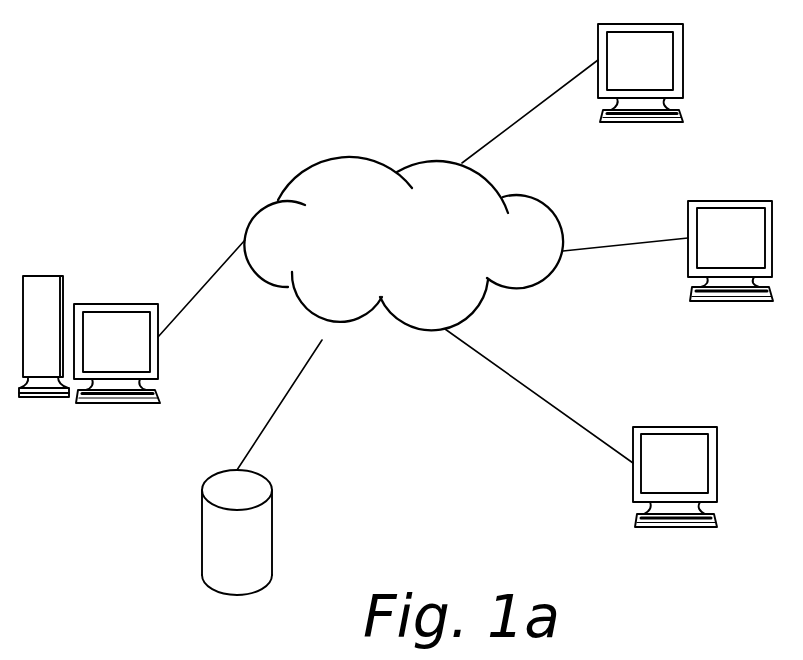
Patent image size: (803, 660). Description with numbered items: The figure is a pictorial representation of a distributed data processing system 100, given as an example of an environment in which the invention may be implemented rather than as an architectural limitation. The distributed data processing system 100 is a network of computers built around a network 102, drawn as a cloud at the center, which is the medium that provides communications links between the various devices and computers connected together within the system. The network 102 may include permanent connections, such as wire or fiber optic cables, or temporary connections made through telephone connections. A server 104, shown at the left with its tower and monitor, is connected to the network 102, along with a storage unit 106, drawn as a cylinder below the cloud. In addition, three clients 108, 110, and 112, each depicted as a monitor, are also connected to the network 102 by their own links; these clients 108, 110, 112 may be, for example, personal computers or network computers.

The distributed data processing system 100 is at (433, 495).
The network 102 is at (420, 245).
The server 104 is at (117, 303).
The storage unit 106 is at (202, 533).
The client 108 is at (598, 40).
The client 110 is at (730, 201).
The client 112 is at (673, 527).